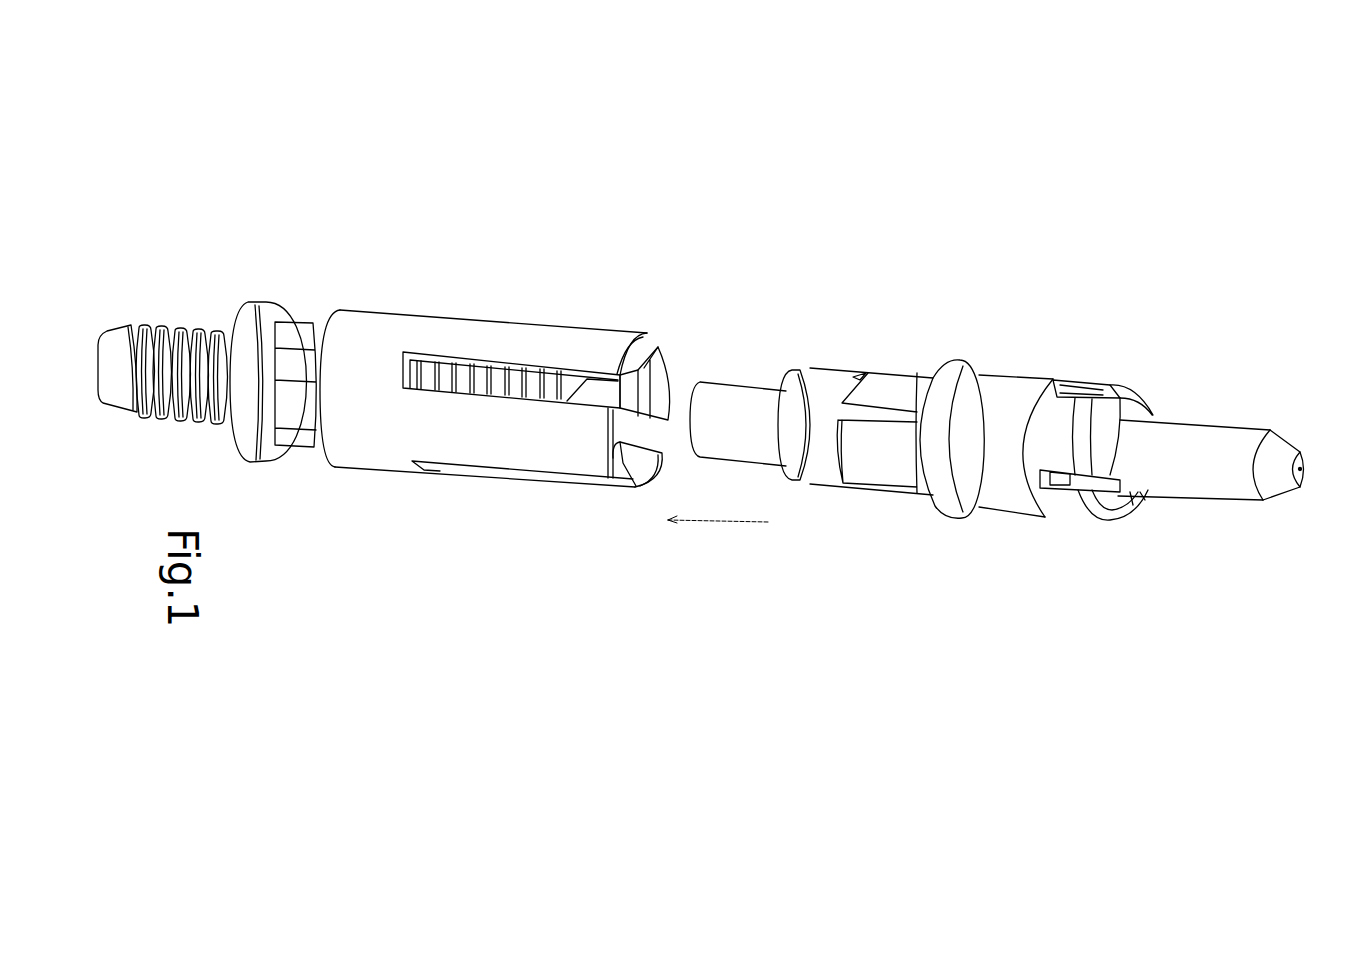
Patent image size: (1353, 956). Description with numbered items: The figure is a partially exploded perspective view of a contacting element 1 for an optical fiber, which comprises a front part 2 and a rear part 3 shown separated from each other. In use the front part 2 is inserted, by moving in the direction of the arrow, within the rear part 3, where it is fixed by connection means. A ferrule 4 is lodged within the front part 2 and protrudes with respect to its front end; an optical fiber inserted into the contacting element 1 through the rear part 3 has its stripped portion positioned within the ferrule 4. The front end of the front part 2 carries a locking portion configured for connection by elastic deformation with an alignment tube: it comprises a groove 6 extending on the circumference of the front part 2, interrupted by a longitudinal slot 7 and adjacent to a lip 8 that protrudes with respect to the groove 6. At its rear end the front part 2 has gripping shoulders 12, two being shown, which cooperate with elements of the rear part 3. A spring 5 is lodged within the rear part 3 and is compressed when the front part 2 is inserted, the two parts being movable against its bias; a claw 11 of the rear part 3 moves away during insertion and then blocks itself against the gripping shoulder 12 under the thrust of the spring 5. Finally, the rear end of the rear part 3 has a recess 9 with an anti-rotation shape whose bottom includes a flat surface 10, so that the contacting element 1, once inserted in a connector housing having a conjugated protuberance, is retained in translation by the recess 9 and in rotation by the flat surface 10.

The contacting element 1 is at (1048, 216).
The front part 2 is at (937, 534).
The rear part 3 is at (435, 495).
The ferrule 4 is at (1243, 425).
The spring 5 is at (481, 380).
The groove 6 is at (1092, 508).
The longitudinal slot 7 is at (1105, 481).
The lip 8 is at (1137, 382).
The recess 9 is at (307, 463).
The flat surface 10 is at (305, 337).
The claw 11 is at (522, 447).
The gripping shoulder 12 is at (870, 368).